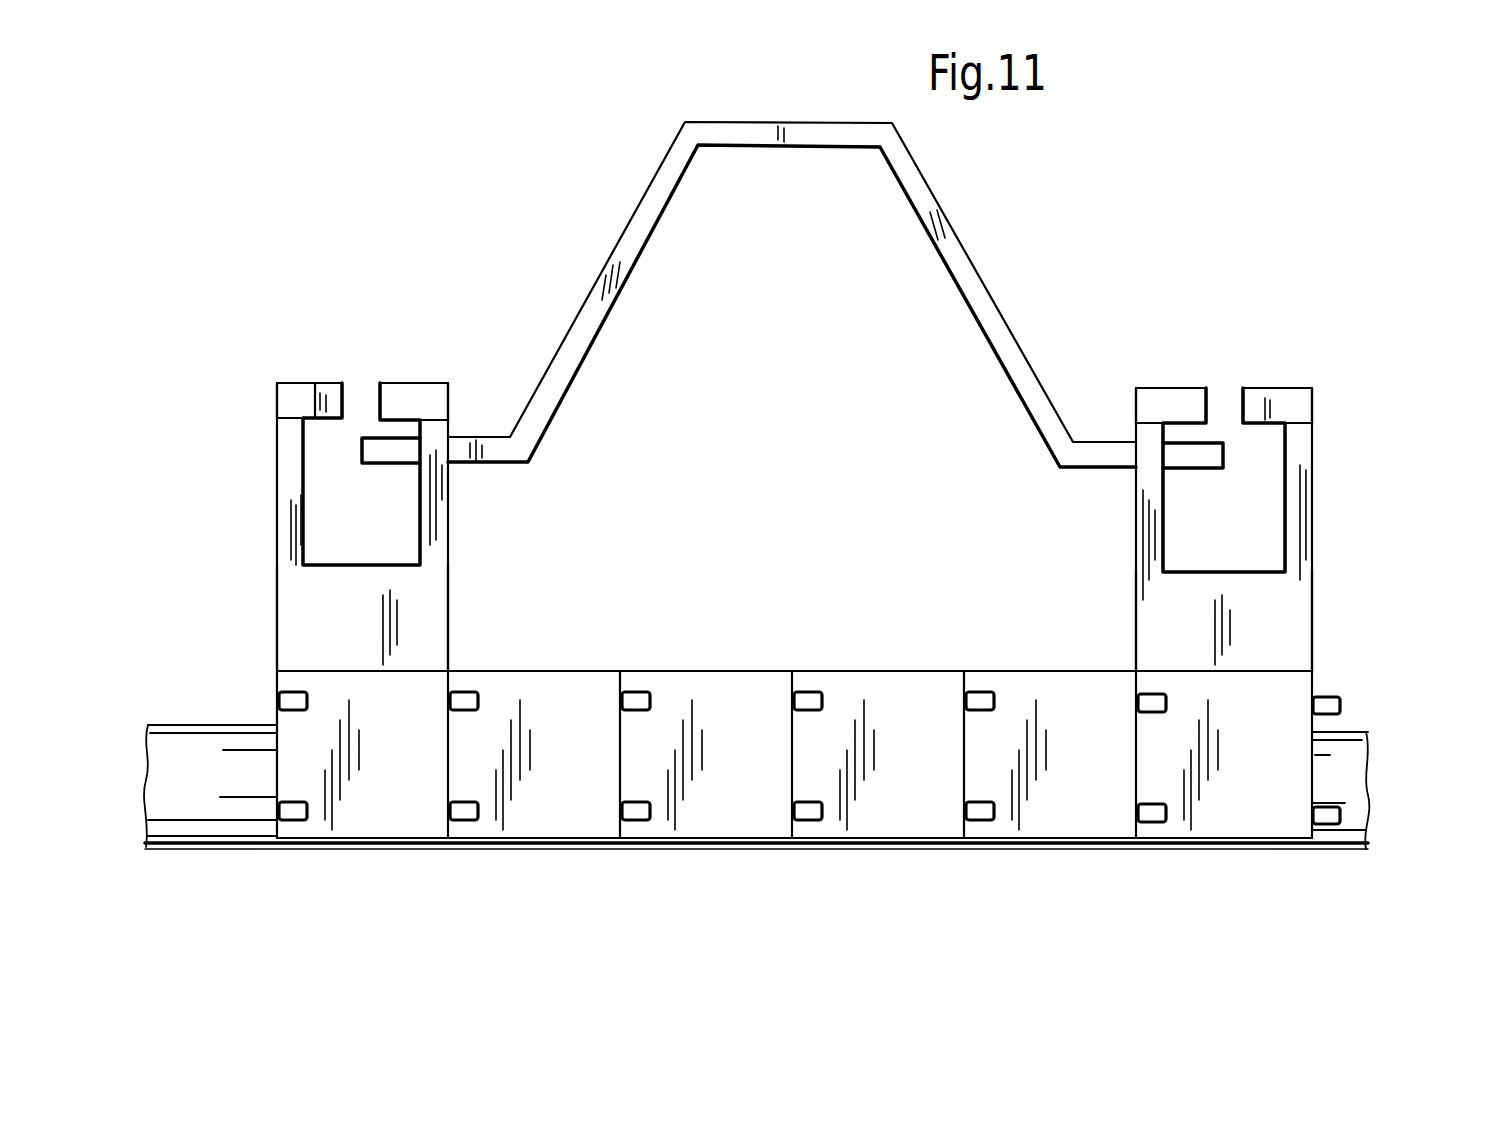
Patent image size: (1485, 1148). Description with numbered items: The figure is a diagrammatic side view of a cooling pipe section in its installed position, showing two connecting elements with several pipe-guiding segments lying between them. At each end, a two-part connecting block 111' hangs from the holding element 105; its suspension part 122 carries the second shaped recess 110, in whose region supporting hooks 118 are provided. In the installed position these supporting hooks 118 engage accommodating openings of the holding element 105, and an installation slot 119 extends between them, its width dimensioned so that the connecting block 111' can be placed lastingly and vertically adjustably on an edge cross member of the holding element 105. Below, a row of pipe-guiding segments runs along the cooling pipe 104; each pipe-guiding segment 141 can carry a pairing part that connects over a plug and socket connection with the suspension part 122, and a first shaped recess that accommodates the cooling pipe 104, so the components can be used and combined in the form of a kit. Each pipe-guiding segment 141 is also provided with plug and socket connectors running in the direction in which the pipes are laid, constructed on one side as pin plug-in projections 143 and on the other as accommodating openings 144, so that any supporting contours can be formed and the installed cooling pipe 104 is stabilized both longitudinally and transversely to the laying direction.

The cooling pipe 104 is at (195, 825).
The holding element 105 is at (572, 237).
The second shaped recess 110 is at (350, 542).
The connecting block 111' is at (794, 610).
The supporting hooks 118 is at (288, 403).
The installation slot 119 is at (362, 398).
The suspension part 122 is at (410, 633).
The pipe-guiding segment 141 is at (743, 882).
The pin plug-in projections 143 is at (1338, 695).
The accommodating openings 144 is at (287, 703).